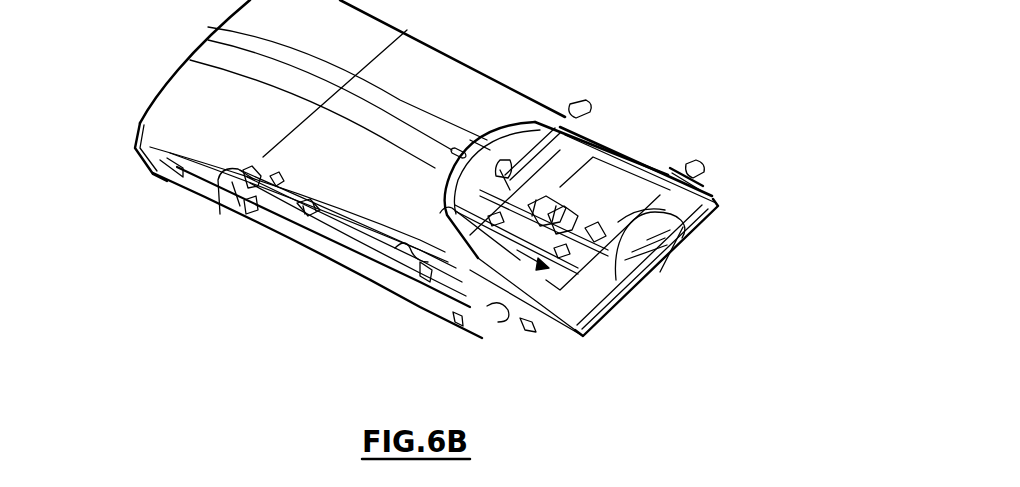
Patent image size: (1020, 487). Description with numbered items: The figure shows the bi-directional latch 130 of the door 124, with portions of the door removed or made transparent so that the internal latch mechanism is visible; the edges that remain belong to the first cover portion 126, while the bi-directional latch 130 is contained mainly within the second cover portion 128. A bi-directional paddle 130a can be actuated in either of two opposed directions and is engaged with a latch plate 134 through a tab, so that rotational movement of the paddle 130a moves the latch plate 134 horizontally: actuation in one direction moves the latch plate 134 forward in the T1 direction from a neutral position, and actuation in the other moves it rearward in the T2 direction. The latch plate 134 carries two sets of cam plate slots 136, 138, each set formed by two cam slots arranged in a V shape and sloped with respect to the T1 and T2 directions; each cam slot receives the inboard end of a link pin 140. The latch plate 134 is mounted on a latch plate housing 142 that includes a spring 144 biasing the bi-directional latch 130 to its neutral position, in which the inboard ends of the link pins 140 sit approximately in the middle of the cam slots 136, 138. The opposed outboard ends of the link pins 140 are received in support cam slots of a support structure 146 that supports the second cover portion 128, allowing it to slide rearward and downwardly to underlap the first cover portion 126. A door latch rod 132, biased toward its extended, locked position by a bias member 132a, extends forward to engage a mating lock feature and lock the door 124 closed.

The door 124 is at (128, 196).
The first cover portion 126 is at (337, 160).
The second cover portion 128 is at (480, 140).
The bi-directional latch 130 is at (583, 318).
The bi-directional paddle 130a is at (683, 240).
The door latch rod 132 is at (347, 230).
The bias member 132a is at (236, 176).
The latch plate 134 is at (590, 152).
The cam plate slots 136 is at (458, 320).
The cam plate slots 138 is at (680, 167).
The link pin 140 is at (488, 160).
The latch plate housing 142 is at (590, 140).
The spring 144 is at (541, 192).
The support structure 146 is at (520, 257).
The forward direction T1 is at (513, 197).
The rearward direction T2 is at (610, 232).